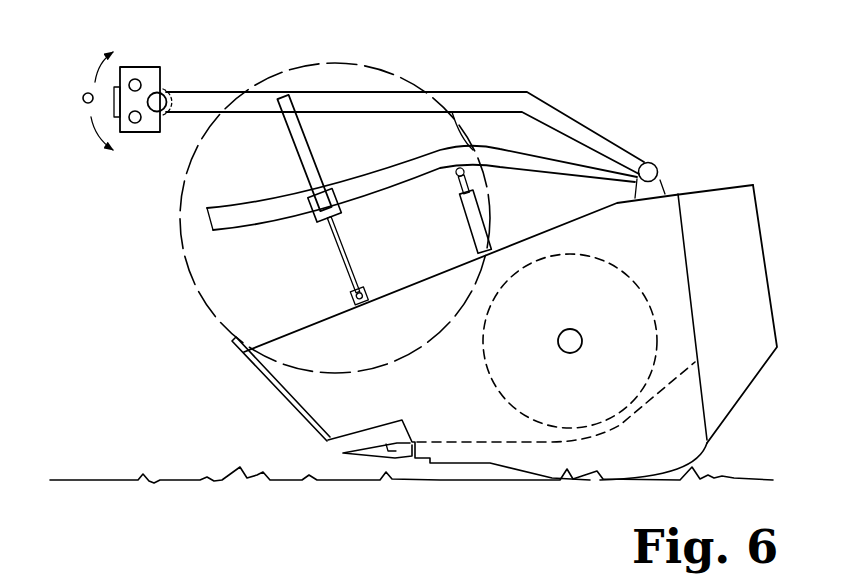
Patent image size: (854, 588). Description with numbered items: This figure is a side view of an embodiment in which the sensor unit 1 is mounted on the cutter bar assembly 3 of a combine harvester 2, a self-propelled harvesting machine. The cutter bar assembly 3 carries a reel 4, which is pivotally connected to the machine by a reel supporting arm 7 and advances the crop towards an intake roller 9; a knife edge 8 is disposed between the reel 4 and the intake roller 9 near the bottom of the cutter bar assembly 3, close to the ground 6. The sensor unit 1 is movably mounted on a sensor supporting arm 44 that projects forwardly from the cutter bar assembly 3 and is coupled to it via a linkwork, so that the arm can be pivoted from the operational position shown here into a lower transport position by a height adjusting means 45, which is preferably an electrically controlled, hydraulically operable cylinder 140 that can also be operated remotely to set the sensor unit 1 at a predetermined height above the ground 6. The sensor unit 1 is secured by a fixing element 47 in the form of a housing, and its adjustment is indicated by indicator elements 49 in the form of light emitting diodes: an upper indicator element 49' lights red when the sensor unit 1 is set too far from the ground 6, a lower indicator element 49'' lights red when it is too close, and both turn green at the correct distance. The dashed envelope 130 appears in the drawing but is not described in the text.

The sensor unit 1 is at (98, 167).
The combine harvester 2 is at (806, 182).
The cutter bar assembly 3 is at (603, 470).
The reel 4 is at (207, 308).
The ground 6 is at (153, 481).
The reel supporting arm 7 is at (550, 152).
The knife edge 8 is at (370, 457).
The intake roller 9 is at (530, 420).
The sensor supporting arm 44 is at (447, 92).
The height adjusting means 45 is at (292, 150).
The fixing element 47 is at (189, 79).
The indicator elements 49 is at (152, 162).
The upper indicator element 49' is at (168, 55).
The lower indicator element 49'' is at (135, 149).
The rotor working circle 130 is at (256, 260).
The hydraulically operable cylinder 140 is at (482, 206).